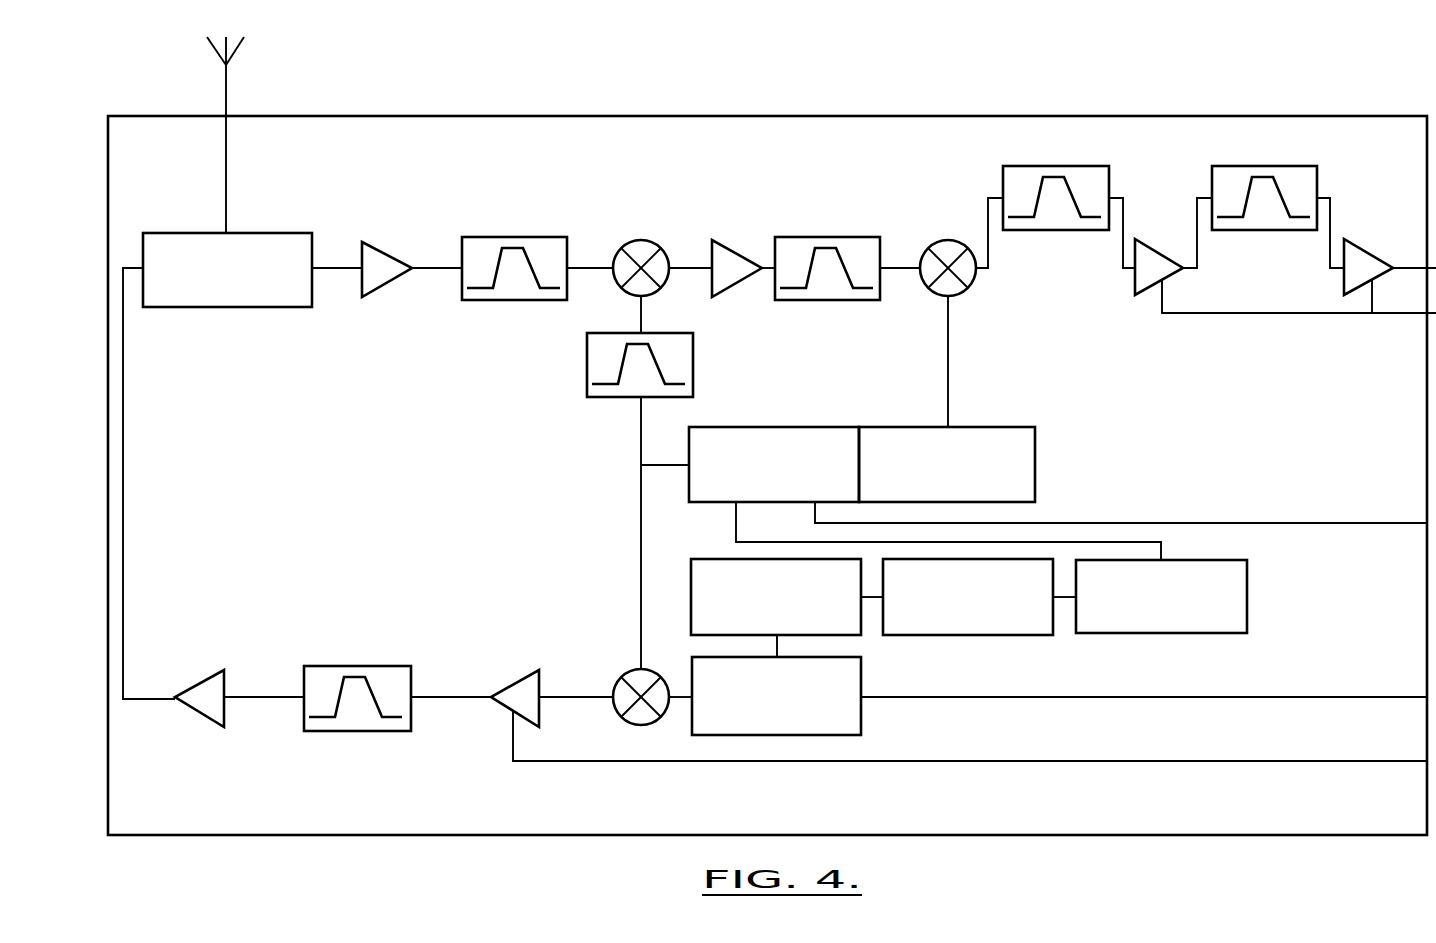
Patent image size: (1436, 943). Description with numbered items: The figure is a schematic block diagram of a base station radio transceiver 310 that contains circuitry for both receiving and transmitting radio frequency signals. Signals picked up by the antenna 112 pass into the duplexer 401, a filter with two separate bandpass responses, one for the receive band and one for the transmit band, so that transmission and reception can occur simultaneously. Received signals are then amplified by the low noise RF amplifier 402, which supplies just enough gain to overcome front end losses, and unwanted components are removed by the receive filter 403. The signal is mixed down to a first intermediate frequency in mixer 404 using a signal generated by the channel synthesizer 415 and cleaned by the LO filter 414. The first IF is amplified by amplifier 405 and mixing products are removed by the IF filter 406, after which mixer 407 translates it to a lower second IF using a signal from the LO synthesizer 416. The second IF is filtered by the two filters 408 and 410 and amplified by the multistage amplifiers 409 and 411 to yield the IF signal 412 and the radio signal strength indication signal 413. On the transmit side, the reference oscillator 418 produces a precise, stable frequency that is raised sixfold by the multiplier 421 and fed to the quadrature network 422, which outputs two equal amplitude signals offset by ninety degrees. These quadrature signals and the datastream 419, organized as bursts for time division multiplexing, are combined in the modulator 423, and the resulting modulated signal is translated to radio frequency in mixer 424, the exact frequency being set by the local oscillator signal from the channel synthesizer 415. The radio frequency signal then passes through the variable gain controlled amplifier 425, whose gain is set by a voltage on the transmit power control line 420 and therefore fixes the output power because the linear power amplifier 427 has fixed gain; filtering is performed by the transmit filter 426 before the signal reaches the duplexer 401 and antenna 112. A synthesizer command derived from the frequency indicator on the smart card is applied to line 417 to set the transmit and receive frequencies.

The antenna 112 is at (249, 135).
The radio transceiver 310 is at (283, 513).
The duplexer 401 is at (245, 297).
The low noise radio frequency amplifier 402 is at (383, 308).
The receive filter 403 is at (511, 240).
The mixer 404 is at (607, 223).
The amplifier 405 is at (696, 239).
The IF filter 406 is at (826, 239).
The mixer 407 is at (914, 223).
The filter 408 is at (1055, 227).
The multistage amplifier 409 is at (1119, 280).
The filter 410 is at (1264, 226).
The multistage amplifier 411 is at (1333, 274).
The IF signal 412 is at (1408, 267).
The radio signal strength indication signal 413 is at (1299, 322).
The local oscillator filter 414 is at (703, 365).
The channel synthesizer 415 is at (797, 499).
The local oscillator synthesizer 416 is at (967, 499).
The synthesizer command line 417 is at (1121, 508).
The reference oscillator 418 is at (1182, 627).
The datastream 419 is at (1144, 681).
The transmit power control line 420 is at (970, 736).
The multiplier 421 is at (990, 622).
The quadrature network 422 is at (798, 631).
The modulator 423 is at (798, 722).
The mixer 424 is at (612, 636).
The variable gain controlled amplifier 425 is at (493, 655).
The transmit filter 426 is at (360, 735).
The linear power amplifier 427 is at (185, 745).